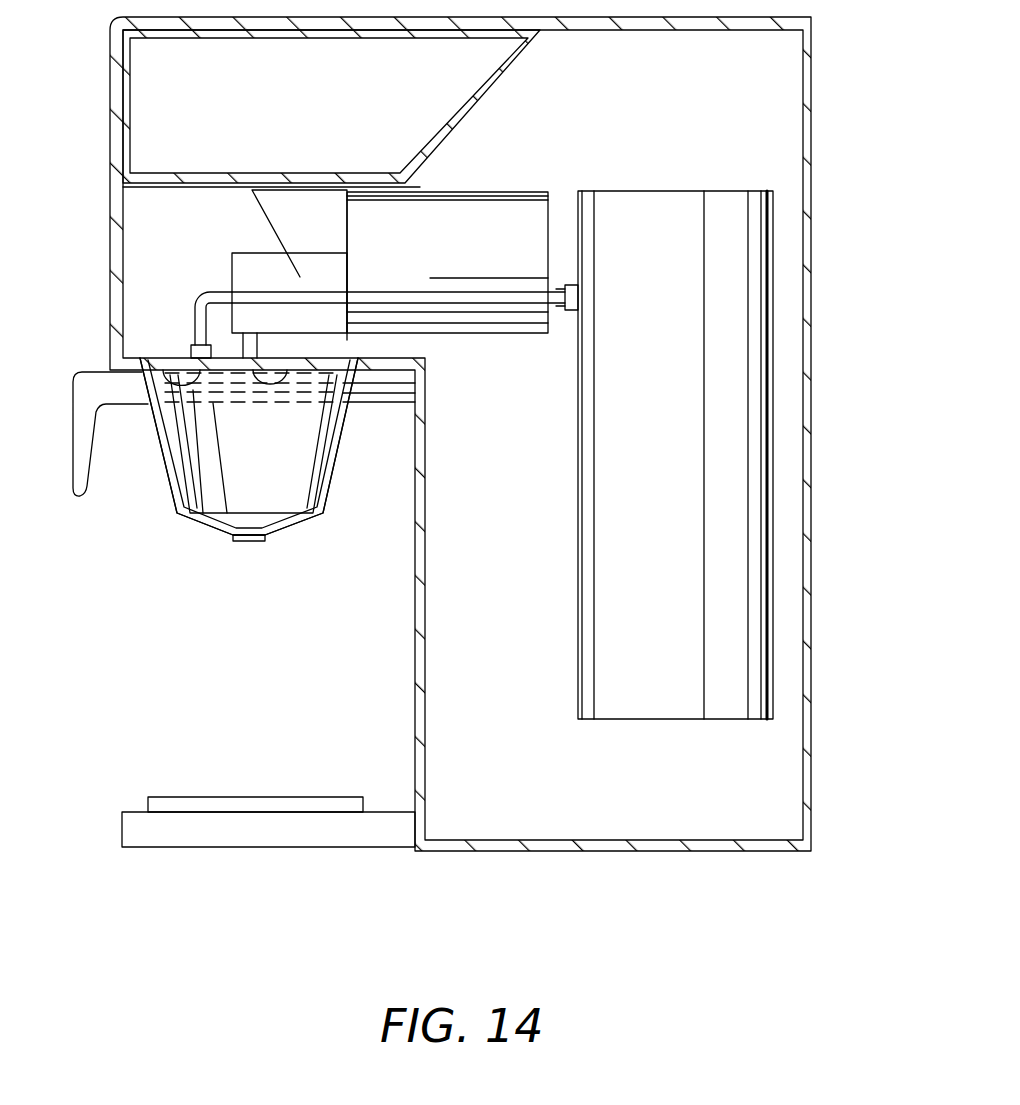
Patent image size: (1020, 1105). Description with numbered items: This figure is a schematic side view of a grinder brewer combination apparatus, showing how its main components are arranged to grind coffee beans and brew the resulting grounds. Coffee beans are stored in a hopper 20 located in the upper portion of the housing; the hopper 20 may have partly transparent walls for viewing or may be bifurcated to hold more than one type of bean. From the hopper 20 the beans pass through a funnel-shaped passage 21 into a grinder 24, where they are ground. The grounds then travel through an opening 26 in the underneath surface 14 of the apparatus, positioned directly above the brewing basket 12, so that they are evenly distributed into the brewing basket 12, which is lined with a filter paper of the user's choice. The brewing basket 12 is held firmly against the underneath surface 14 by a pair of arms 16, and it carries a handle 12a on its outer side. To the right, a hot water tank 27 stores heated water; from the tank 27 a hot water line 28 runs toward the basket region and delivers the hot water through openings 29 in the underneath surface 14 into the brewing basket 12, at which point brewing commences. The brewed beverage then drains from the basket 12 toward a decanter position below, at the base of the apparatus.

The brewing basket 12 is at (293, 527).
The carafe handle 12a is at (112, 368).
The underneath surface 14 is at (150, 370).
The pair of arms 16 is at (213, 403).
The hopper 20 is at (110, 75).
The funnel 21 is at (252, 200).
The grinder 24 is at (232, 255).
The opening 26 is at (280, 372).
The hot water tank 27 is at (775, 400).
The hot water line 28 is at (497, 303).
The openings 29 is at (163, 365).